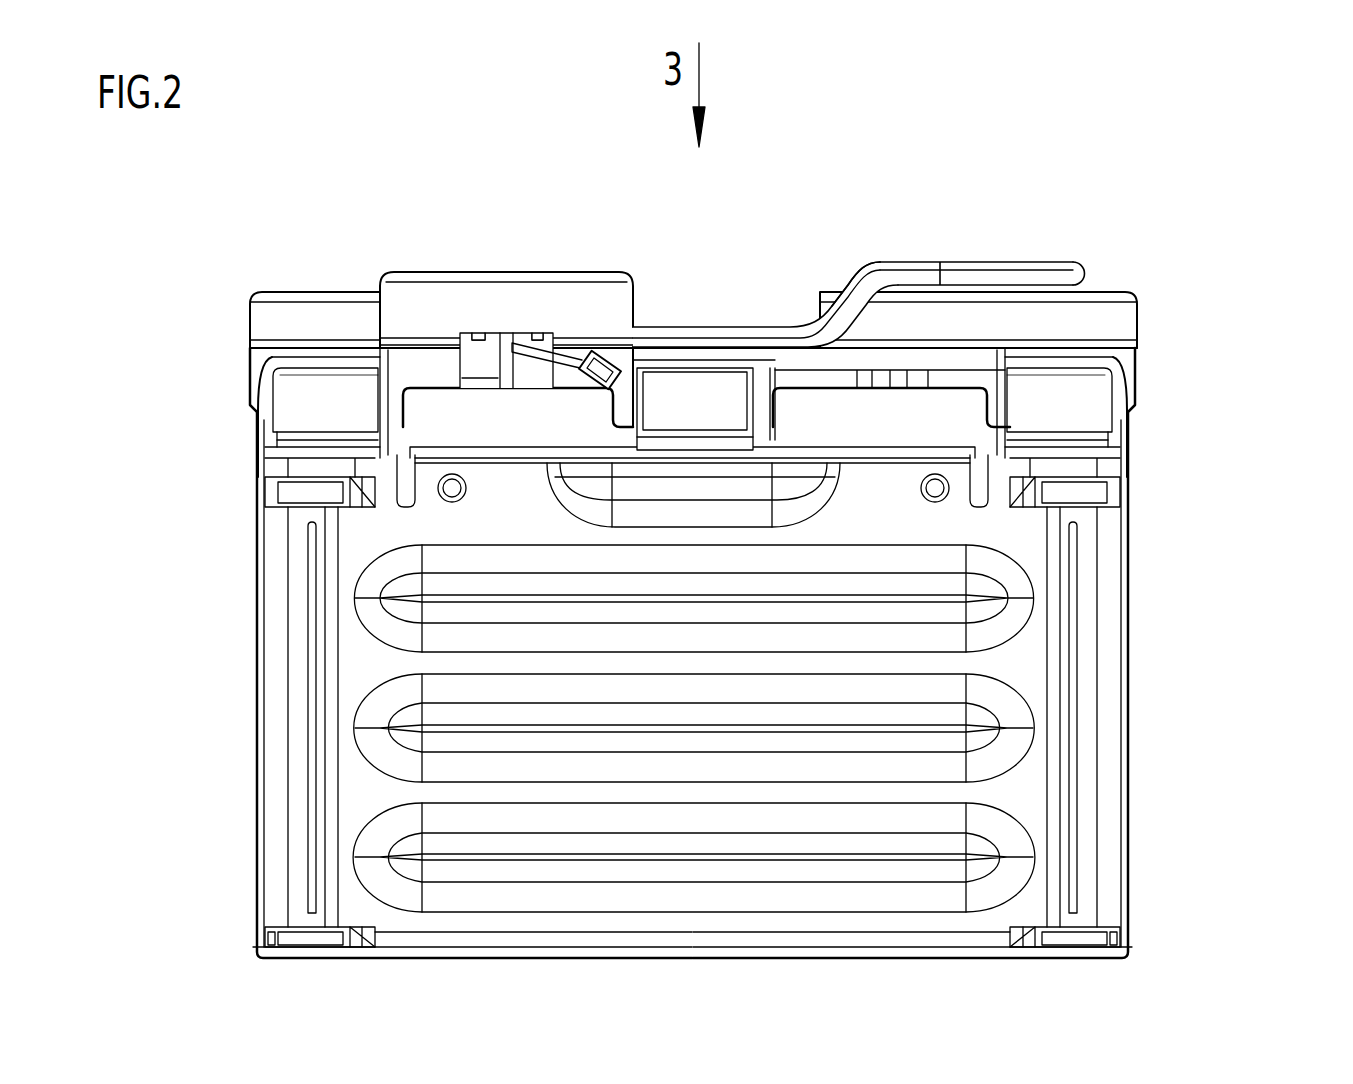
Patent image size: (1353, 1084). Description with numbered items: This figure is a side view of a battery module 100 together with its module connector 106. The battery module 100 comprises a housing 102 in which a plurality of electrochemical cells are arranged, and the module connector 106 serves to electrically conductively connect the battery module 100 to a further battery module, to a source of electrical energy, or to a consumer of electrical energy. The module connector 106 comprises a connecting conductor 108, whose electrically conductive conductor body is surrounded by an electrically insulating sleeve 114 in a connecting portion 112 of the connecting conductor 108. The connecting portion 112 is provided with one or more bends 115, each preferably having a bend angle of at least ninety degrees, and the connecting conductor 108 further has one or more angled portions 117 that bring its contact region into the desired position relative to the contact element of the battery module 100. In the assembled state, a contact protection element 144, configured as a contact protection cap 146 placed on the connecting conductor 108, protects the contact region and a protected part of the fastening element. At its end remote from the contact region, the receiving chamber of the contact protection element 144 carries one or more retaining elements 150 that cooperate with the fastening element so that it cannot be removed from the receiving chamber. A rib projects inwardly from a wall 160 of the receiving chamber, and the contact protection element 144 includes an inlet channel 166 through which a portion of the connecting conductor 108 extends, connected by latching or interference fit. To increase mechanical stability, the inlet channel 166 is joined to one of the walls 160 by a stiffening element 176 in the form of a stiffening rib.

The battery module 100 is at (1145, 332).
The housing 102 is at (1090, 543).
The module connector 106 is at (723, 328).
The connecting conductor 108 is at (793, 345).
The connecting portion 112 is at (908, 259).
The electrically insulating sleeve 114 is at (984, 268).
The bend 115 is at (1084, 256).
The angled portion 117 is at (836, 276).
The contact protection element 144 is at (485, 358).
The contact protection cap 146 is at (470, 360).
The retaining element 150 is at (474, 337).
The wall 160 is at (473, 378).
The inlet channel 166 is at (605, 355).
The stiffening element 176 is at (582, 336).